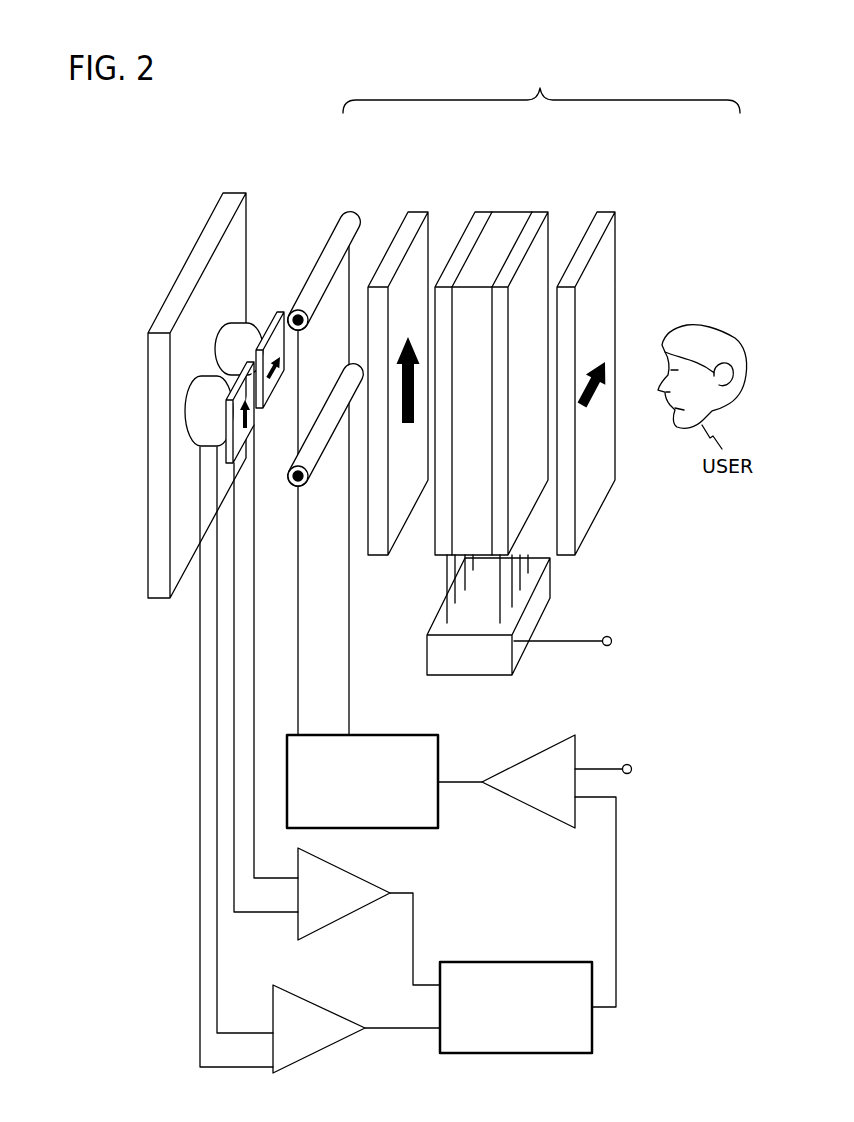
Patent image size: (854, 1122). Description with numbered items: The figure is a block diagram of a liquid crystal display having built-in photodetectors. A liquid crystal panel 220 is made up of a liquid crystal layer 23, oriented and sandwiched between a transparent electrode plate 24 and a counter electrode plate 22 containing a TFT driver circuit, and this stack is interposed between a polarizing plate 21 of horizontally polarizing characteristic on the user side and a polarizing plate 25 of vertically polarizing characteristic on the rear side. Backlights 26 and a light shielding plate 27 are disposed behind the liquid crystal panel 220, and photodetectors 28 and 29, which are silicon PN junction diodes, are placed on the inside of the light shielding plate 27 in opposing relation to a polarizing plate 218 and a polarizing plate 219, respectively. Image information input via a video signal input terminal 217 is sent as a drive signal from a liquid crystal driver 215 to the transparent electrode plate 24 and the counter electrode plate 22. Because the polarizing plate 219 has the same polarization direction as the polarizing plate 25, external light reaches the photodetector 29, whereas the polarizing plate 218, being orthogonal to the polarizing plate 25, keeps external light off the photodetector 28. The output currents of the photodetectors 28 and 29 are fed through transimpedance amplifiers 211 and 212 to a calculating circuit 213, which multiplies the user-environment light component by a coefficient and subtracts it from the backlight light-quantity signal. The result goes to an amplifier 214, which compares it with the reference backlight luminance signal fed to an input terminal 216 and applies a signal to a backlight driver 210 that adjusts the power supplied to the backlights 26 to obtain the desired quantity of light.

The polarizing plate 21 is at (595, 212).
The counter electrode plate 22 is at (549, 212).
The liquid crystal layer 23 is at (512, 210).
The transparent electrode plate 24 is at (483, 212).
The polarizing plate 25 is at (405, 212).
The backlights 26 is at (333, 220).
The light shielding plate 27 is at (203, 232).
The photodetector 28 is at (222, 347).
The photodetector 29 is at (193, 413).
The backlight driver 210 is at (390, 830).
The amplifier 211 is at (335, 920).
The amplifier 212 is at (343, 1039).
The calculating circuit 213 is at (503, 962).
The amplifier 214 is at (538, 811).
The liquid crystal driver 215 is at (519, 655).
The input terminal 216 is at (631, 764).
The video signal input terminal 217 is at (608, 636).
The polarizing plate 218 is at (277, 308).
The polarizing plate 219 is at (222, 432).
The liquid crystal panel 220 is at (541, 76).